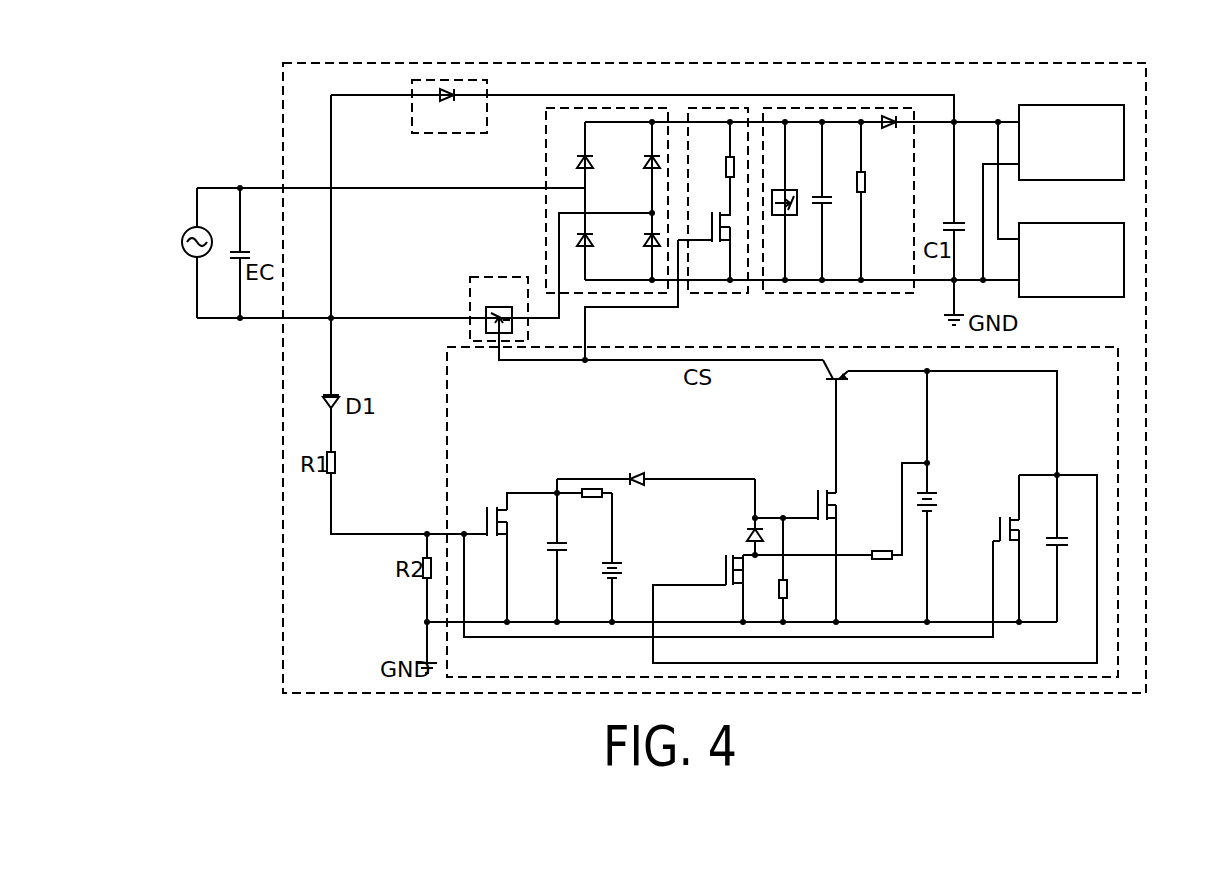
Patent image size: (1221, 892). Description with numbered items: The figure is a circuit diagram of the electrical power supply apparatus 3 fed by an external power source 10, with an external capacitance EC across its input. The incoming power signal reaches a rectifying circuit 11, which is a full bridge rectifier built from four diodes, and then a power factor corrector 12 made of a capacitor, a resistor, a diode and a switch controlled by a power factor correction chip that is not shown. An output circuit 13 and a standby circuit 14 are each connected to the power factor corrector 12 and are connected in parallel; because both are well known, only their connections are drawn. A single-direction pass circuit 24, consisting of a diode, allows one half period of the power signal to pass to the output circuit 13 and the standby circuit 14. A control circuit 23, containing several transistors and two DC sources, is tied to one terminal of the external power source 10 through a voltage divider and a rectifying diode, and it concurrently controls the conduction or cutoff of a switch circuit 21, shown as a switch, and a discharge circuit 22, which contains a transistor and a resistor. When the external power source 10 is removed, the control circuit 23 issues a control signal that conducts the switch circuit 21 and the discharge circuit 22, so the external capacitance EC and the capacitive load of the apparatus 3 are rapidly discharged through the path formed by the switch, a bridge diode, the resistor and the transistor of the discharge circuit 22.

The electrical power supply apparatus 3 is at (283, 110).
The external power source 10 is at (186, 233).
The rectifying circuit 11 is at (607, 108).
The power factor corrector 12 is at (840, 108).
The output circuit 13 is at (1124, 140).
The standby circuit 14 is at (1124, 258).
The switch circuit 21 is at (477, 278).
The discharge circuit 22 is at (720, 108).
The control circuit 23 is at (1118, 385).
The single-direction pass circuit 24 is at (412, 107).